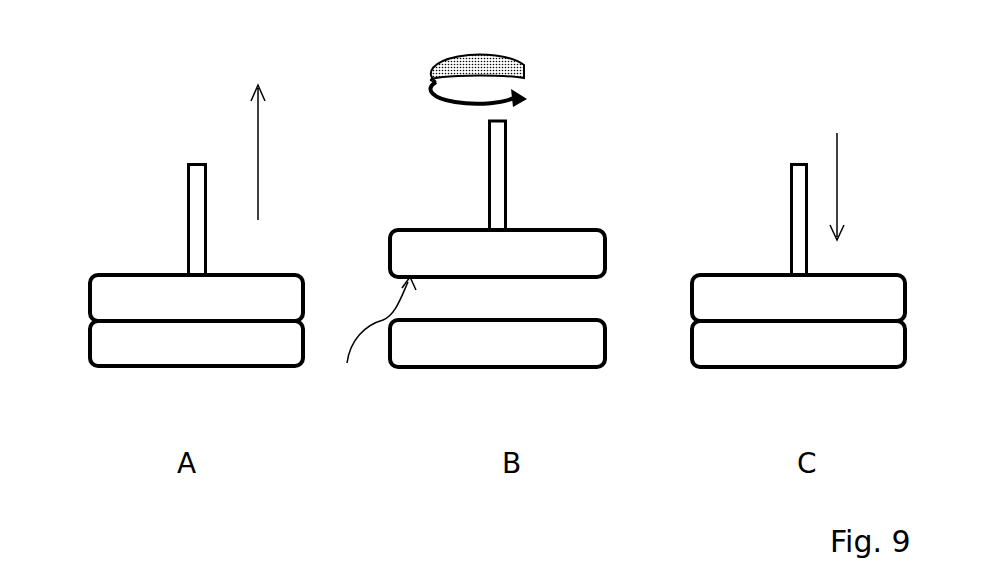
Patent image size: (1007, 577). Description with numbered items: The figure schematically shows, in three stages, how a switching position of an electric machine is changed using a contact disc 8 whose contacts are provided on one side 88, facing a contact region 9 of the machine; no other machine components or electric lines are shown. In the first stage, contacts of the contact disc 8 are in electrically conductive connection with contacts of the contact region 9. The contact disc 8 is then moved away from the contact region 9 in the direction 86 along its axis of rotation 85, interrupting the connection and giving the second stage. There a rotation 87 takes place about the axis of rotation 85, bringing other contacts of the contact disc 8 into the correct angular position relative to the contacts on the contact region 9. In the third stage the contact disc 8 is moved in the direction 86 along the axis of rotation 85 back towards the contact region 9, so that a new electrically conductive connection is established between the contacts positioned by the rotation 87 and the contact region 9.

The contact disc 8 is at (120, 273).
The contact region 9 is at (93, 350).
The axis of rotation 85 is at (187, 188).
The direction 86 is at (257, 118).
The rotation 87 is at (513, 63).
The contacts on one side 88 is at (377, 338).